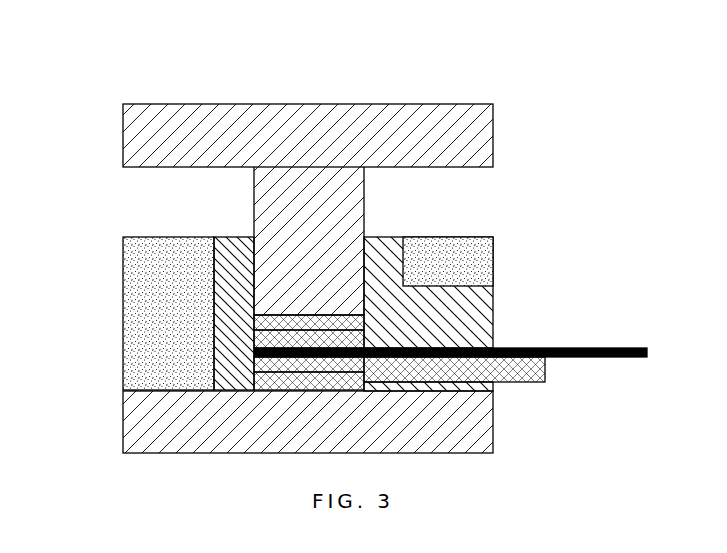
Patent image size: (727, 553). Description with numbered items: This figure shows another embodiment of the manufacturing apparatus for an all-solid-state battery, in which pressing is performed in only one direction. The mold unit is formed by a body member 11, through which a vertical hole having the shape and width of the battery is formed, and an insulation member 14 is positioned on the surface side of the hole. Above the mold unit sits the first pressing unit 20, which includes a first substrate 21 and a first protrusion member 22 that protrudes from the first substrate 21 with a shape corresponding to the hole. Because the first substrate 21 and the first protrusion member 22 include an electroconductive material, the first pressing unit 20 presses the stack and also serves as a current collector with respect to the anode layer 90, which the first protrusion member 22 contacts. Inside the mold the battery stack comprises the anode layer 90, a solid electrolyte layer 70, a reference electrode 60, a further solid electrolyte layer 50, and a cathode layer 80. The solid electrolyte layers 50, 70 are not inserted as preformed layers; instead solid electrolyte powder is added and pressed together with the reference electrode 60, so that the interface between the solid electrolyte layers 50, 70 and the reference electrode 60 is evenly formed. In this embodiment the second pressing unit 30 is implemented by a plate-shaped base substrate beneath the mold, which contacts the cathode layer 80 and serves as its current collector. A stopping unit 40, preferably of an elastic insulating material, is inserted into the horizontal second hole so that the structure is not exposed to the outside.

The first pressing unit 20 is at (359, 157).
The first substrate 21 is at (486, 137).
The first protrusion member 22 is at (355, 203).
The body member 11 is at (137, 257).
The insulation member 14 is at (231, 245).
The anode layer 90 is at (260, 315).
The solid electrolyte layer 70 is at (258, 341).
The reference electrode 60 is at (608, 347).
The solid electrolyte layer 50 is at (258, 363).
The cathode layer 80 is at (230, 387).
The stopping unit 40 is at (540, 368).
The second pressing unit 30 is at (483, 431).